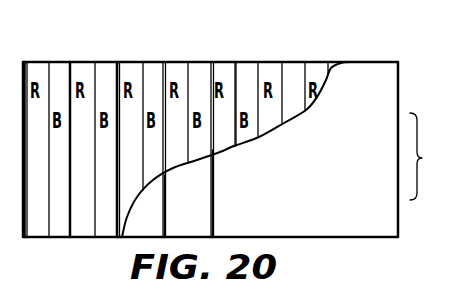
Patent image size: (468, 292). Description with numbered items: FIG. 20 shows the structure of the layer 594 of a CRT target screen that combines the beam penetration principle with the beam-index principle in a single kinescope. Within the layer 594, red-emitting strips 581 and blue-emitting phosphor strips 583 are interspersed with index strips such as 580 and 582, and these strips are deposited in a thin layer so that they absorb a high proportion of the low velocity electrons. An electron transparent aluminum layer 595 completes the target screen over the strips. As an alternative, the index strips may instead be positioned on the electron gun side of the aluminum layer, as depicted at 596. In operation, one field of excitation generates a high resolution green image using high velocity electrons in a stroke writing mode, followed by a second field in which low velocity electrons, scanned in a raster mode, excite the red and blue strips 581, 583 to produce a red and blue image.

The index strip 580 is at (25, 62).
The index strip 582 is at (117, 62).
The red-emitting strip 581 is at (227, 68).
The blue-emitting phosphor strip 583 is at (250, 70).
The layer 594 is at (428, 158).
The electron transparent aluminum layer 595 is at (356, 228).
The index strips positioned on the electron gun side of the aluminum layer 596 is at (215, 174).